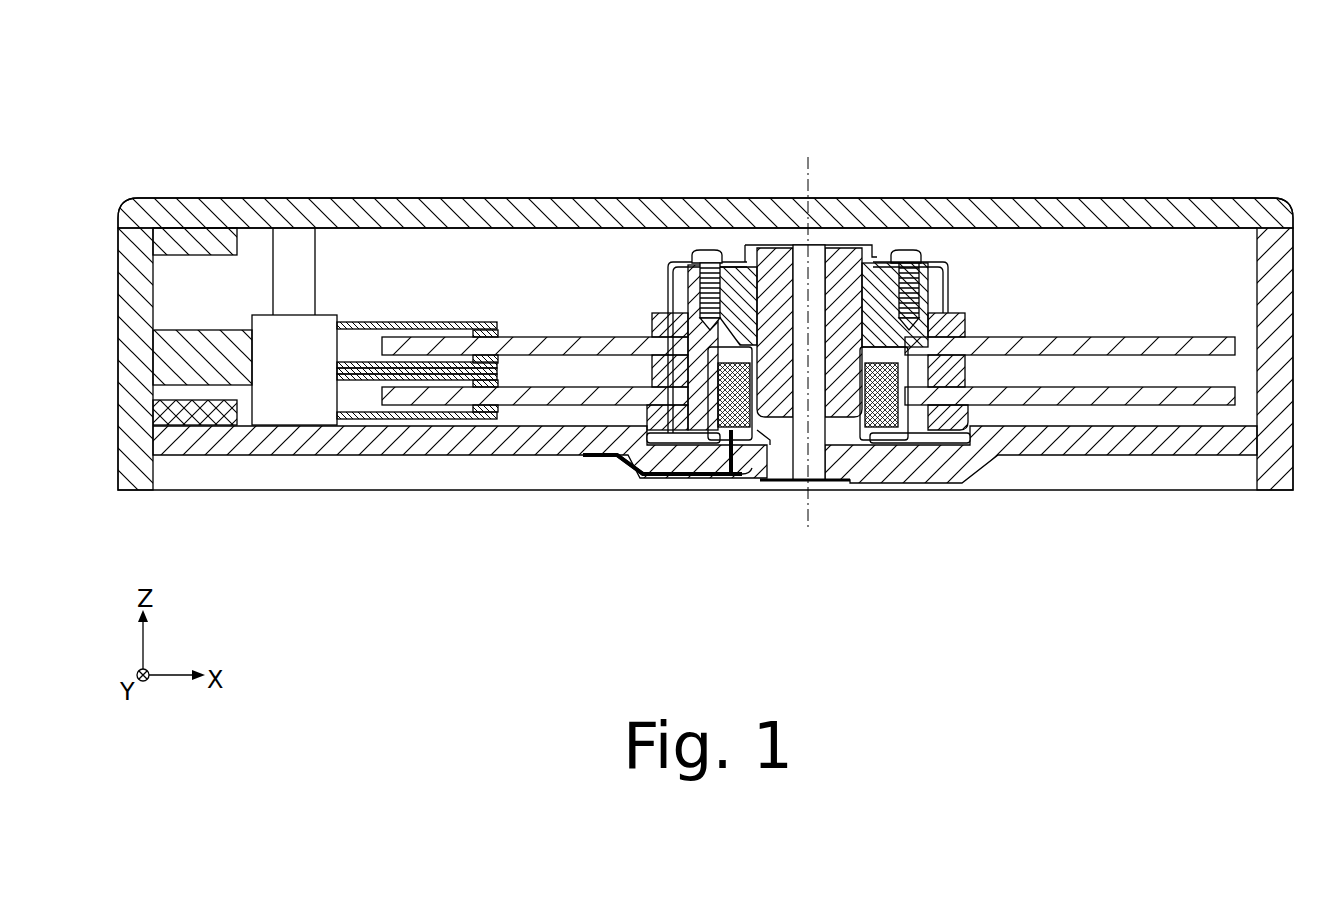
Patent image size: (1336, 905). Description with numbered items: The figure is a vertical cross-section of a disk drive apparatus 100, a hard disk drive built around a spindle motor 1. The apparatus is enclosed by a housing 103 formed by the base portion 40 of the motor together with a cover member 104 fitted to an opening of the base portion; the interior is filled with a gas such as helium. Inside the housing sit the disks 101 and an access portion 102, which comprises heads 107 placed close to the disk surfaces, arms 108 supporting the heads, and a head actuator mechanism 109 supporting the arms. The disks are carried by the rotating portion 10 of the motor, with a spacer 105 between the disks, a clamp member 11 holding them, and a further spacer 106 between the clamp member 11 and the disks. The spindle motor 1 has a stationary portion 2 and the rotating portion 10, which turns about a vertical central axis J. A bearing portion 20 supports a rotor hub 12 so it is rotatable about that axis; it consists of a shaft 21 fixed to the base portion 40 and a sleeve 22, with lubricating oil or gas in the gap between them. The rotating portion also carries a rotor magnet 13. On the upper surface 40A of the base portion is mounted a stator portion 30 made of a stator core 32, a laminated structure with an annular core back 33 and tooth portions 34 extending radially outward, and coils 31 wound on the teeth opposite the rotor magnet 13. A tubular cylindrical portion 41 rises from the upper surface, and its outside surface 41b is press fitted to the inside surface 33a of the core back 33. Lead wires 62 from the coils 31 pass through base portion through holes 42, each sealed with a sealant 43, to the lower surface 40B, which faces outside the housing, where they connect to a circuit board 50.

The disk drive apparatus 100 is at (478, 182).
The housing 103 is at (553, 194).
The cover member 104 is at (627, 228).
The stationary portion 2 is at (977, 481).
The head actuator mechanism 109 is at (337, 318).
The access portion 102 is at (393, 312).
The arm 108 is at (440, 322).
The head 107 is at (493, 330).
The disk 101 is at (545, 337).
The spacer 106 is at (652, 320).
The spacer 105 is at (652, 372).
The clamp member 11 is at (677, 282).
The tooth portion 34 is at (667, 315).
The stator core 32 is at (715, 300).
The rotor magnet 13 is at (675, 445).
The core back 33 is at (763, 438).
The inside surface 33a is at (775, 460).
The coil 31 is at (745, 290).
The spindle motor 1 is at (966, 258).
The sleeve 22 is at (762, 262).
The shaft 21 is at (793, 248).
The bearing portion 20 is at (824, 234).
The central axis J is at (797, 321).
The rotating portion 10 is at (868, 234).
The rotor hub 12 is at (883, 250).
The stator portion 30 is at (785, 485).
The cylindrical portion 41 is at (978, 337).
The outside surface 41b is at (995, 342).
The base portion 40 is at (655, 478).
The upper surface 40A is at (612, 462).
The lower surface 40B is at (668, 476).
The base portion through hole 42 is at (733, 480).
The sealant 43 is at (760, 470).
The lead wire 62 is at (720, 478).
The circuit board 50 is at (692, 478).